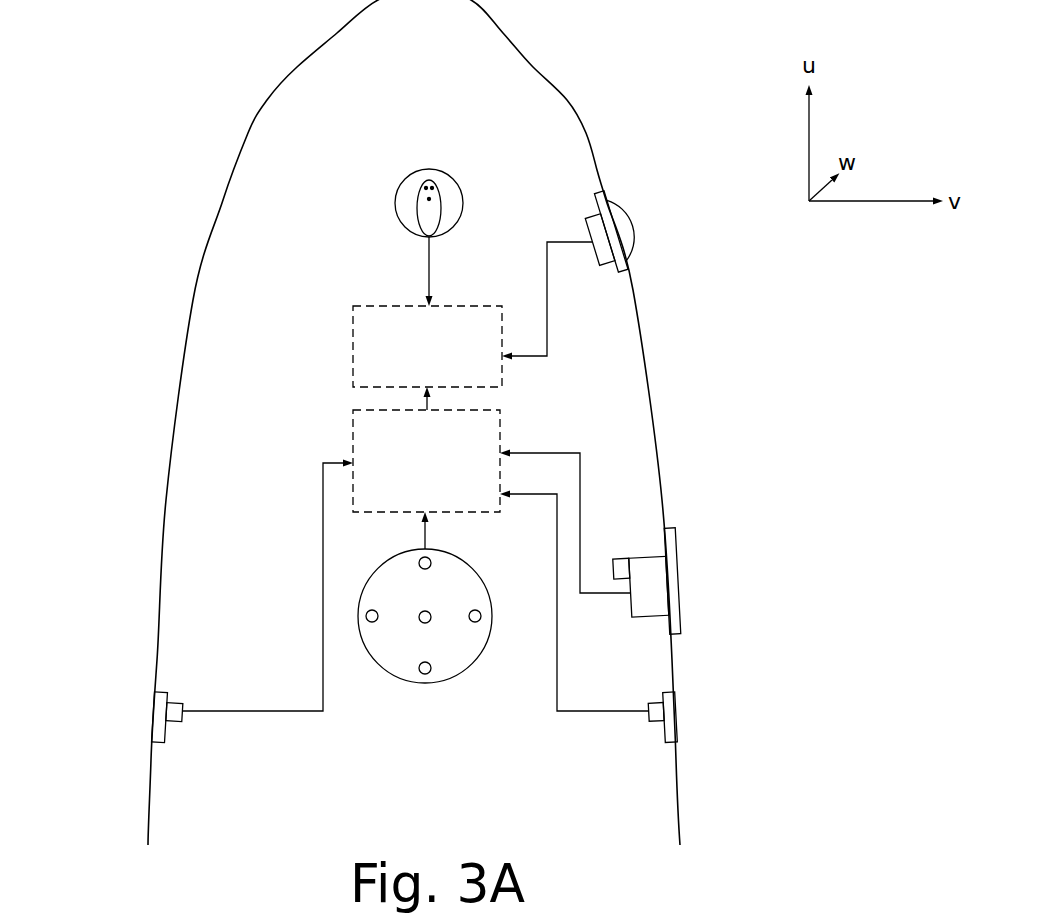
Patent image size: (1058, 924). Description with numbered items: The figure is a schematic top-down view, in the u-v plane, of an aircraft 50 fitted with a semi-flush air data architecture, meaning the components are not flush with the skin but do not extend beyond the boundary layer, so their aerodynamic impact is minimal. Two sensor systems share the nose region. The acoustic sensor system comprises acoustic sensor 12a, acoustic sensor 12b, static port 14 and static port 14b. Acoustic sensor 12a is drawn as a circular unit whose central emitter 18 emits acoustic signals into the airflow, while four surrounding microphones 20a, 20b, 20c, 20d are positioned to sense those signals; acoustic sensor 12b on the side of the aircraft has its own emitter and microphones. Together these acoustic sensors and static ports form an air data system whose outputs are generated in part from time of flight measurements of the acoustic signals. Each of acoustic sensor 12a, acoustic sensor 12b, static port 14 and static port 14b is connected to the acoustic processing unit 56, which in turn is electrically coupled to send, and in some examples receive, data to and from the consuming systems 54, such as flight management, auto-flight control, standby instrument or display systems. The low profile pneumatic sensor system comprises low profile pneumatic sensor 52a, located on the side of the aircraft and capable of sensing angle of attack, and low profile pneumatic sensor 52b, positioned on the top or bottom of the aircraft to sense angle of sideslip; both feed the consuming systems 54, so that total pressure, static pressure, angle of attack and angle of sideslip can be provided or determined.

The aircraft 50 is at (303, 48).
The low profile pneumatic sensor 52b is at (429, 170).
The low profile pneumatic sensor 52a is at (633, 224).
The consuming systems 54 is at (456, 306).
The acoustic processing unit 56 is at (499, 427).
The acoustic sensor 12a is at (441, 630).
The acoustic sensor 12b is at (678, 578).
The static port 14 is at (153, 714).
The static port 14b is at (676, 714).
The emitter 18 is at (431, 612).
The microphone 20a is at (432, 558).
The microphone 20b is at (481, 617).
The microphone 20c is at (420, 671).
The microphone 20d is at (366, 611).